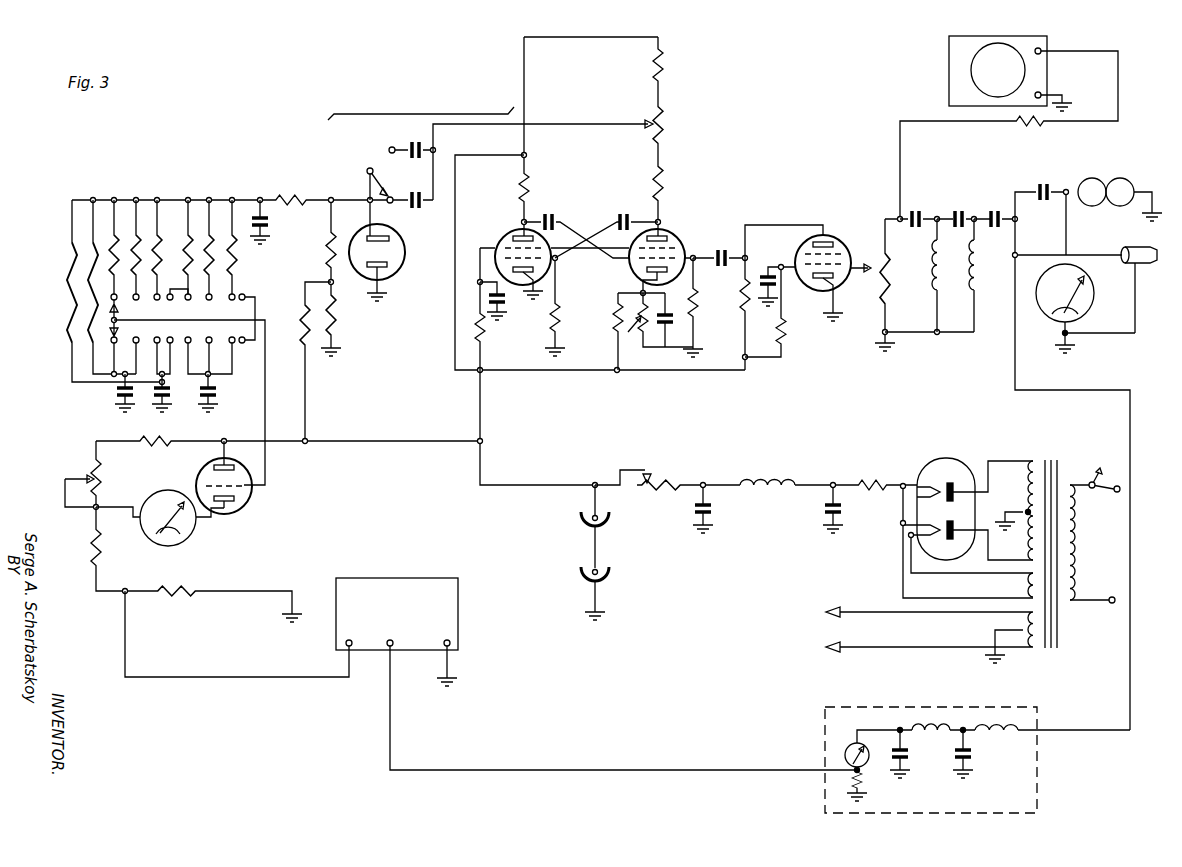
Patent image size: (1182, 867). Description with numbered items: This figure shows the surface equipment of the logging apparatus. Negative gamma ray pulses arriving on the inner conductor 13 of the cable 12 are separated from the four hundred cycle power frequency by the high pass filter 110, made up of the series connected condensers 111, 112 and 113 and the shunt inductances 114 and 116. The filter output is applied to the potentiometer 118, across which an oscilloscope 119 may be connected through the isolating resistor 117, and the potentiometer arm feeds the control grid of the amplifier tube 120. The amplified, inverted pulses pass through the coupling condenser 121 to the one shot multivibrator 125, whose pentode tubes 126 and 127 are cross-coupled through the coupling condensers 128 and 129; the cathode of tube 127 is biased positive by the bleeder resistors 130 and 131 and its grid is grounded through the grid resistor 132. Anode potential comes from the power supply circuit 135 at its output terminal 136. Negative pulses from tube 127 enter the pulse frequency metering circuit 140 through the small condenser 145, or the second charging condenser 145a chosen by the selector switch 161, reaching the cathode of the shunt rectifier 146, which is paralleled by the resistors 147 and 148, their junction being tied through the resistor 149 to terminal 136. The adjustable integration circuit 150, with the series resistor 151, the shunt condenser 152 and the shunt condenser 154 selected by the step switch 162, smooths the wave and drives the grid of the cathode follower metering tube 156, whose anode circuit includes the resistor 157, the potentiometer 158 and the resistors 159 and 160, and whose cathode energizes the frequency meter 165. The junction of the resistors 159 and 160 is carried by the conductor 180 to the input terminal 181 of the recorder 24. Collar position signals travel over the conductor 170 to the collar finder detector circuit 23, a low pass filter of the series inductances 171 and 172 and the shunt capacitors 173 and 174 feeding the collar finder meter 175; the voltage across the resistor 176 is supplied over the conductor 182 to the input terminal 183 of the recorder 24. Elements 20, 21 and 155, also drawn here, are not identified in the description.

The cable 12 is at (1128, 246).
The inner conductor 13 is at (1122, 264).
The coupling coil 20 is at (1096, 180).
The coupling capacitor 21 is at (1044, 180).
The collar finder detector circuit 23 is at (928, 706).
The recorder 24 is at (398, 577).
The high pass filter 110 is at (958, 269).
The series connected condenser 111 is at (1002, 196).
The series connected condenser 112 is at (958, 210).
The series connected condenser 113 is at (916, 210).
The shunt connected inductance 114 is at (980, 268).
The shunt connected inductance 116 is at (936, 268).
The isolating resistor 117 is at (1034, 128).
The potentiometer 118 is at (880, 300).
The oscilloscope 119 is at (948, 71).
The amplifier tube 120 is at (840, 246).
The coupling condenser 121 is at (734, 236).
The one shot multivibrator 125 is at (600, 217).
The pentode type tube 126 is at (506, 236).
The pentode type tube 127 is at (676, 240).
The coupling condenser 128 is at (550, 214).
The coupling condenser 129 is at (624, 214).
The resistor 130 is at (614, 320).
The resistor 131 is at (628, 334).
The grid resistor 132 is at (696, 300).
The power supply circuit 135 is at (888, 571).
The output terminal 136 is at (594, 482).
The pulse frequency metering circuit 140 is at (417, 94).
The condenser 145 is at (421, 208).
The second charging condenser 145a is at (412, 144).
The shunt rectifier 146 is at (393, 262).
The resistor 147 is at (326, 252).
The resistor 148 is at (338, 322).
The resistor 149 is at (302, 318).
The adjustable integration circuit 150 is at (212, 321).
The series resistor 151 is at (295, 186).
The shunt condenser 152 is at (268, 230).
The shunt condenser 154 is at (120, 398).
The conductor 155 is at (265, 414).
The metering tube 156 is at (252, 500).
The resistor 157 is at (162, 442).
The potentiometer 158 is at (92, 464).
The resistor 159 is at (100, 555).
The resistor 160 is at (192, 578).
The selector switch 161 is at (368, 168).
The step switch 162 is at (118, 320).
The frequency meter 165 is at (192, 536).
The conductor 170 is at (1130, 652).
The series inductance element 171 is at (1002, 736).
The series inductance element 172 is at (932, 736).
The shunt capacitive element 173 is at (972, 764).
The shunt capacitive element 174 is at (908, 762).
The collar finder meter 175 is at (845, 752).
The resistor 176 is at (852, 780).
The conductor 180 is at (266, 678).
The input terminal 181 is at (345, 644).
The conductor 182 is at (604, 770).
The input terminal 183 is at (392, 648).